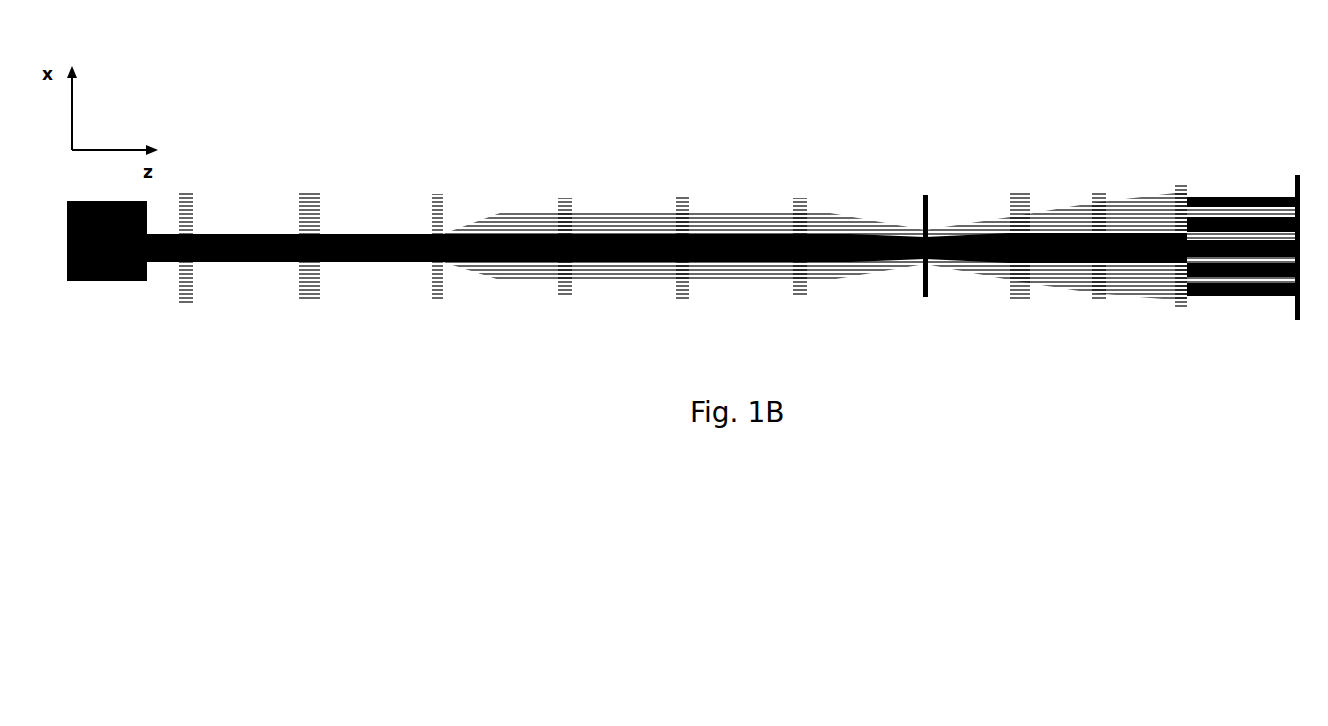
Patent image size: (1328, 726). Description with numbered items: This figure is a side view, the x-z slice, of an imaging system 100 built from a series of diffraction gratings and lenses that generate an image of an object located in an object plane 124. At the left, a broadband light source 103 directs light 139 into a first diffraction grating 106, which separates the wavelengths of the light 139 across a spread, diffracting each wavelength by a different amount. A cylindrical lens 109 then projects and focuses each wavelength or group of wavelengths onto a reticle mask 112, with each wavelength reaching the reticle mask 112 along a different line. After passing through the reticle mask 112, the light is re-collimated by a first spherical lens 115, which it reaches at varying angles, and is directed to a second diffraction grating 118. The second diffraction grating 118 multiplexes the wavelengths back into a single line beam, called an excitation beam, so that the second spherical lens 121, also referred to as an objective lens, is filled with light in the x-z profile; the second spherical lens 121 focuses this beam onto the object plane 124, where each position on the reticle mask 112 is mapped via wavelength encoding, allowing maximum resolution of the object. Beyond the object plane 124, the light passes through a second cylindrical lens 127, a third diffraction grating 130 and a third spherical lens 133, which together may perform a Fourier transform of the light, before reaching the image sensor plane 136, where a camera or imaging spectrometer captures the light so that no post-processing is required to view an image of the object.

The imaging system 100 is at (1220, 43).
The broadband light source 103 is at (92, 282).
The first diffraction grating 106 is at (207, 185).
The cylindrical lens 109 is at (316, 278).
The reticle mask 112 is at (452, 206).
The first spherical lens 115 is at (573, 282).
The second diffraction grating 118 is at (668, 207).
The second spherical lens 121 is at (811, 282).
The object plane 124 is at (908, 208).
The second cylindrical lens 127 is at (1033, 278).
The third diffraction grating 130 is at (1084, 189).
The third spherical lens 133 is at (1193, 280).
The image sensor plane 136 is at (1281, 210).
The light 139 is at (283, 311).